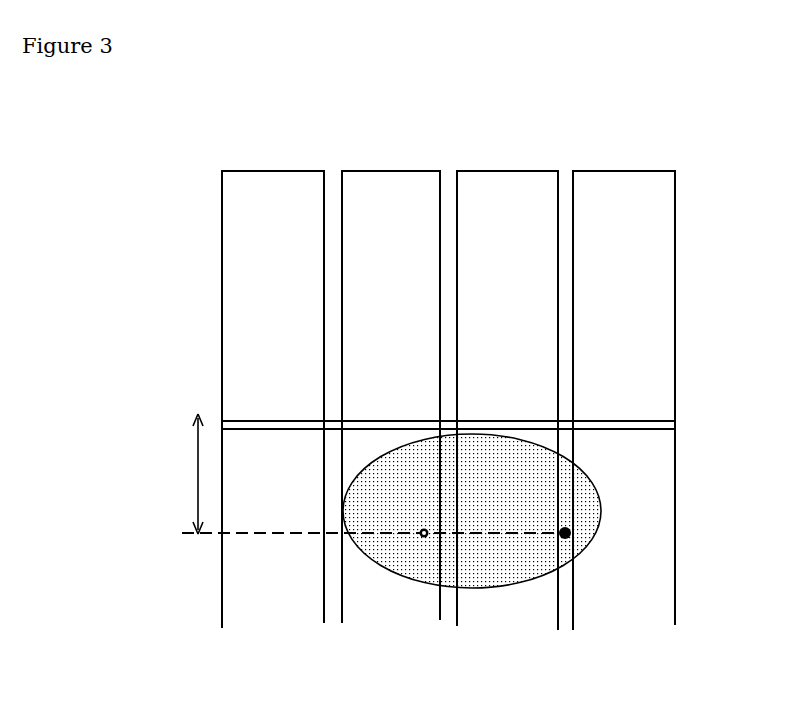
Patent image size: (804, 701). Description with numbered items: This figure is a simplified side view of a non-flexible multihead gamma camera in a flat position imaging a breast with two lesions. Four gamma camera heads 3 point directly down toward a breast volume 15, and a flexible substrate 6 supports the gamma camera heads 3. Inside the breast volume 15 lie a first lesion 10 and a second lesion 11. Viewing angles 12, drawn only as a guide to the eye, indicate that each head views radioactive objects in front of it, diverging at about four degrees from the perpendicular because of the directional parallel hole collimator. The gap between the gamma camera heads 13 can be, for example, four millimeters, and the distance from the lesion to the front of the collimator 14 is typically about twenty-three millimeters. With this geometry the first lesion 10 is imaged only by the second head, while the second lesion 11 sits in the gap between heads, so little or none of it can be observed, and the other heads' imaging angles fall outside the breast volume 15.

The gamma camera heads 3 is at (290, 230).
The flexible substrate 6 is at (675, 425).
The first lesion 10 is at (422, 538).
The second lesion 11 is at (569, 537).
The viewing angles 12 is at (675, 498).
The gap between the gamma camera heads 13 is at (333, 623).
The distance from the lesion to the front of the collimator 14 is at (363, 474).
The breast volume 15 is at (515, 585).